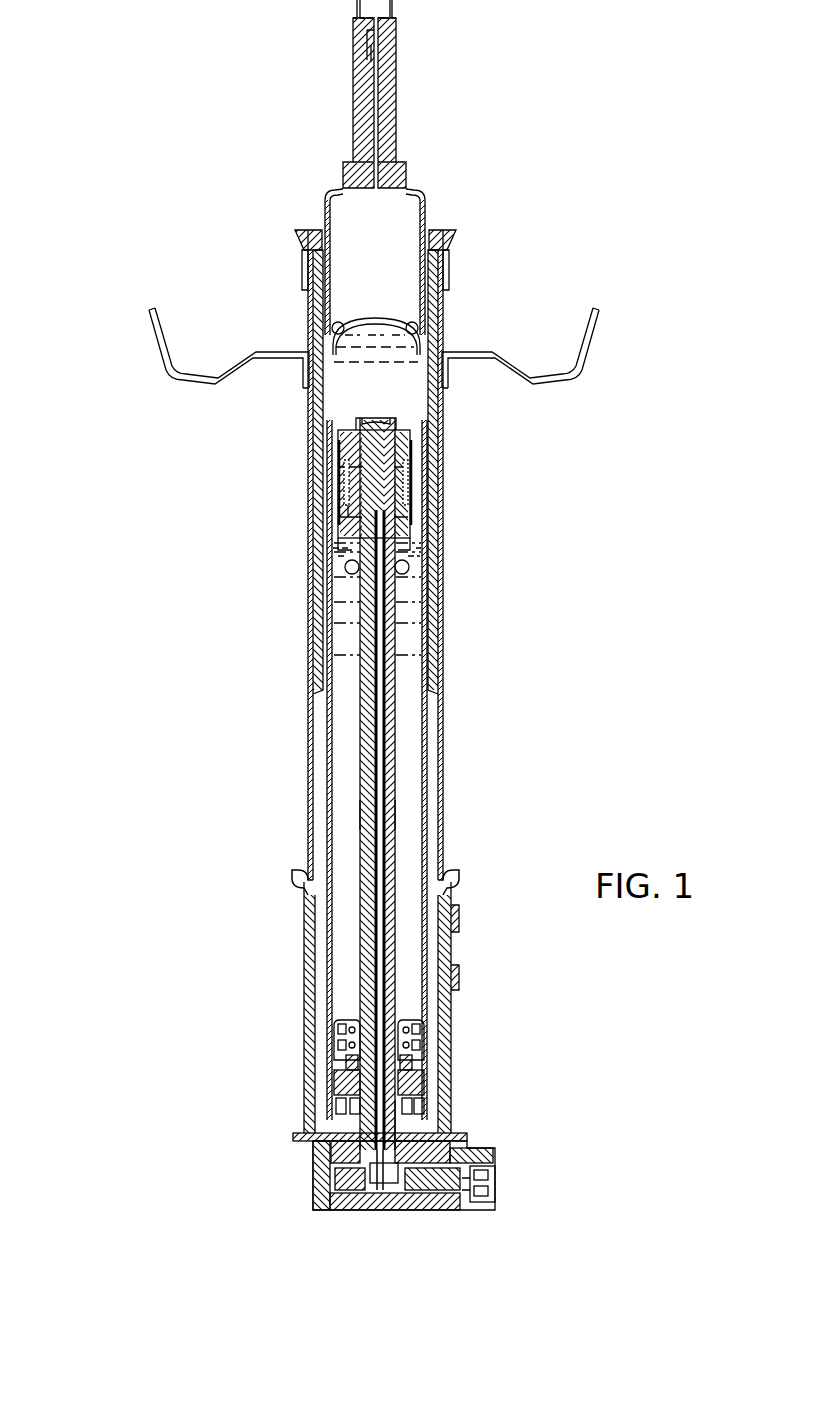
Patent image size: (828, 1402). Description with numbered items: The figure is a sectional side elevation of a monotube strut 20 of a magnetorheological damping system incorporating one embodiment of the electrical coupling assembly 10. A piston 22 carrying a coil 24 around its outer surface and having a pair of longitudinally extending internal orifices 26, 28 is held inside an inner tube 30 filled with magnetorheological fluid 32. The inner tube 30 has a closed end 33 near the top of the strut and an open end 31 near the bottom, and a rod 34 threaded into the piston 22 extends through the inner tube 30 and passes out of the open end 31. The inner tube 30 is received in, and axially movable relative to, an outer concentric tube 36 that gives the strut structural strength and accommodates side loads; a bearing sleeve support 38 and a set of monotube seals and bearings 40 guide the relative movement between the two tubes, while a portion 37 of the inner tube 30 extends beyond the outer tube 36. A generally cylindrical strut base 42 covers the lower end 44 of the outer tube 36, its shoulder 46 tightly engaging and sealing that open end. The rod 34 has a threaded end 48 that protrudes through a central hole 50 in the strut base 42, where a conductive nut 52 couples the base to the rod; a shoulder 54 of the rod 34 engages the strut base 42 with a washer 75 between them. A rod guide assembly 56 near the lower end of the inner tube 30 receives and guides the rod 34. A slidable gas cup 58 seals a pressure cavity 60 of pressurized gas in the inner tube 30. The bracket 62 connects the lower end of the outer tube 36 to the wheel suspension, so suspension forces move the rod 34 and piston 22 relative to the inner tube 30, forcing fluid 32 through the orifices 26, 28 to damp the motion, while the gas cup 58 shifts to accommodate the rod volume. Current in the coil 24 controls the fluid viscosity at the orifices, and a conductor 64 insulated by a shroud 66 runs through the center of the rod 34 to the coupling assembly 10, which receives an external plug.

The electrical coupling assembly 10 is at (462, 1218).
The monotube strut 20 is at (214, 579).
The piston 22 is at (414, 515).
The coil 24 is at (412, 477).
The internal orifice 26 is at (416, 425).
The internal orifice 28 is at (338, 425).
The inner tube 30 is at (428, 724).
The open end 31 is at (344, 1122).
The magnetorheological fluid 32 is at (410, 600).
The closed end 33 is at (437, 176).
The rod 34 is at (359, 723).
The outer concentric tube 36 is at (442, 768).
The portion of the inner tube 37 is at (430, 202).
The bearing sleeve support 38 is at (442, 664).
The monotube seals and bearings 40 is at (442, 570).
The strut base 42 is at (311, 1210).
The lower end 44 is at (316, 1183).
The shoulder 46 is at (450, 1133).
The threaded end 48 is at (408, 1210).
The central hole 50 is at (424, 1088).
The conductive nut 52 is at (348, 1142).
The shoulder 54 is at (328, 1135).
The rod guide assembly 56 is at (418, 1038).
The slidable gas cup 58 is at (372, 318).
The pressure cavity 60 is at (345, 192).
The bracket 62 is at (303, 915).
The conductor 64 is at (364, 804).
The shroud 66 is at (371, 767).
The washer 75 is at (408, 1124).